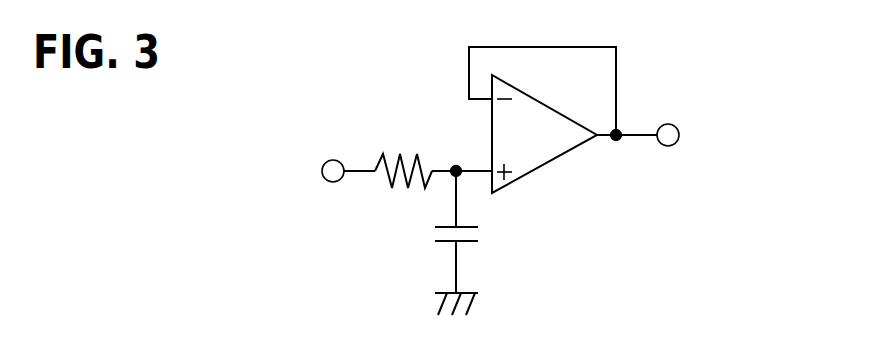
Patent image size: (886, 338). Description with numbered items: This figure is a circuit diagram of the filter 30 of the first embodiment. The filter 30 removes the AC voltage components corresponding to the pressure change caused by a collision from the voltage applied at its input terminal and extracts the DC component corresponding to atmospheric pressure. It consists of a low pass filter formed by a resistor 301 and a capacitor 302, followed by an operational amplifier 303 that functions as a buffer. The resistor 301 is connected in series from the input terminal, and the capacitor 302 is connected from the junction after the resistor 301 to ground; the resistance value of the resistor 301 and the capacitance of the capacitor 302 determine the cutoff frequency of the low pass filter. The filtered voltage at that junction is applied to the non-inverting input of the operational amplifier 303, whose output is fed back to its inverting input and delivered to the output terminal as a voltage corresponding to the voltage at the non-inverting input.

The filter 30 is at (652, 92).
The resistor 301 is at (407, 181).
The capacitor 302 is at (447, 243).
The operational amplifier 303 is at (563, 108).